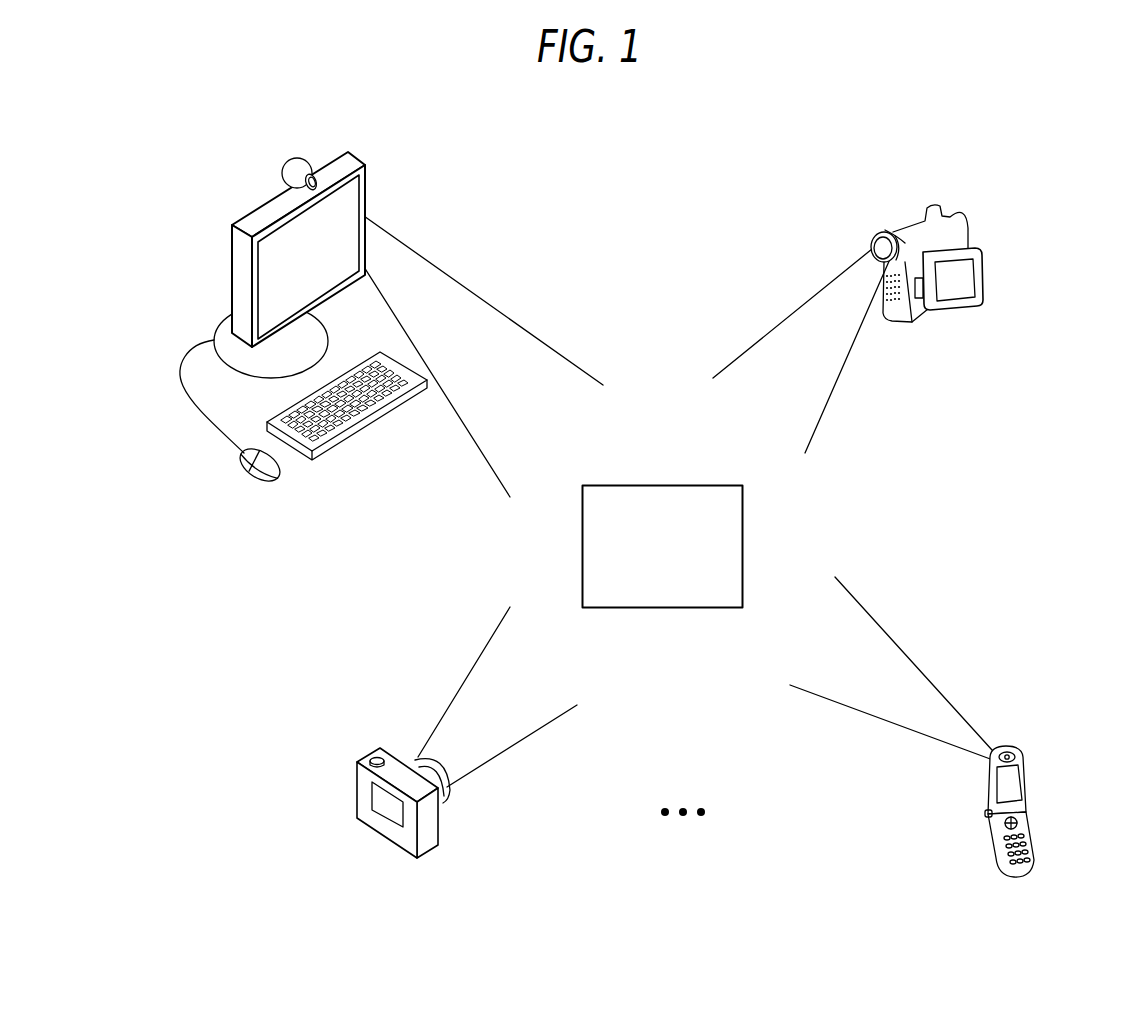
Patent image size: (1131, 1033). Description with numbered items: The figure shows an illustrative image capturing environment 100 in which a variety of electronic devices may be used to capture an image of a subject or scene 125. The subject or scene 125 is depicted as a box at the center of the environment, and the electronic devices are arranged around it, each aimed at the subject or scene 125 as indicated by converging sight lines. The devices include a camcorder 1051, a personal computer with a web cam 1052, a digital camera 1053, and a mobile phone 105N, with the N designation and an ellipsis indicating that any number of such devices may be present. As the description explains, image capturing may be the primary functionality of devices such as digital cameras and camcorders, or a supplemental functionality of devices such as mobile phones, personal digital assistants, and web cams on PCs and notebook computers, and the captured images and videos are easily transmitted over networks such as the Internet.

The image capturing environment 100 is at (1081, 140).
The electronic device 1051 is at (983, 268).
The electronic device 1052 is at (220, 315).
The electronic device 1053 is at (357, 788).
The electronic device 105N is at (1025, 763).
The subject or scene 125 is at (582, 546).